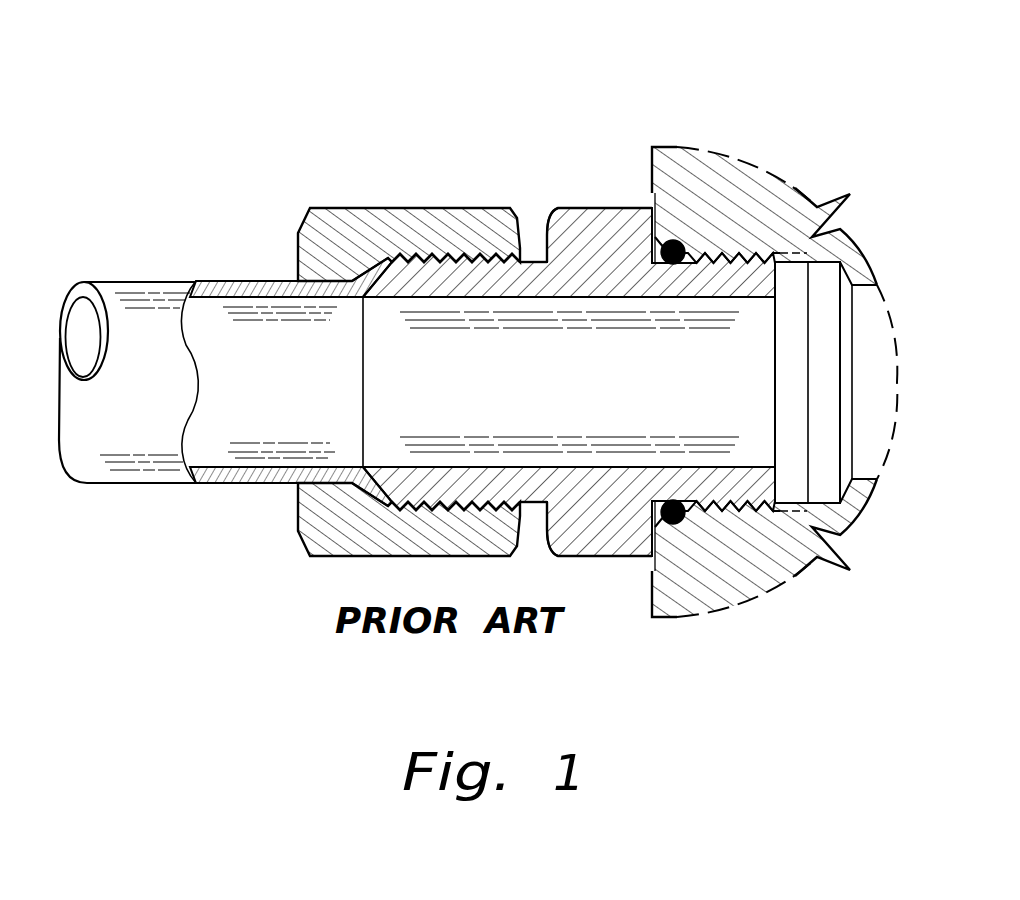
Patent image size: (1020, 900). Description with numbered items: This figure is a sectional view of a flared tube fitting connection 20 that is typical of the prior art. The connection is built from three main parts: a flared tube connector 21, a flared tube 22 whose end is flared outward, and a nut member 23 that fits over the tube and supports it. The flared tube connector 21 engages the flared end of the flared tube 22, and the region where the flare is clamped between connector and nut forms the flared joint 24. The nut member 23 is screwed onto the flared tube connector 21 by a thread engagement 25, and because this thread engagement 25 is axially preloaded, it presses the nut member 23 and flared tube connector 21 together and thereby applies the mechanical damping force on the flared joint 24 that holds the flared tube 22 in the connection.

The flared tube fitting connection 20 is at (533, 180).
The flared tube connector 21 is at (593, 208).
The flared tube 22 is at (187, 282).
The nut member 23 is at (312, 208).
The flared joint 24 is at (377, 280).
The thread engagement 25 is at (453, 252).